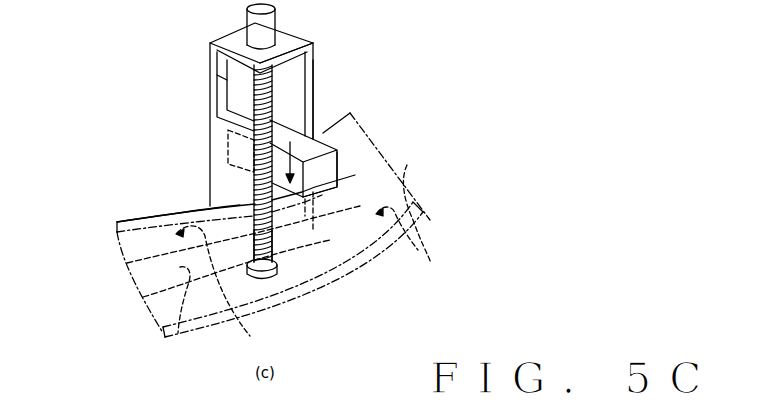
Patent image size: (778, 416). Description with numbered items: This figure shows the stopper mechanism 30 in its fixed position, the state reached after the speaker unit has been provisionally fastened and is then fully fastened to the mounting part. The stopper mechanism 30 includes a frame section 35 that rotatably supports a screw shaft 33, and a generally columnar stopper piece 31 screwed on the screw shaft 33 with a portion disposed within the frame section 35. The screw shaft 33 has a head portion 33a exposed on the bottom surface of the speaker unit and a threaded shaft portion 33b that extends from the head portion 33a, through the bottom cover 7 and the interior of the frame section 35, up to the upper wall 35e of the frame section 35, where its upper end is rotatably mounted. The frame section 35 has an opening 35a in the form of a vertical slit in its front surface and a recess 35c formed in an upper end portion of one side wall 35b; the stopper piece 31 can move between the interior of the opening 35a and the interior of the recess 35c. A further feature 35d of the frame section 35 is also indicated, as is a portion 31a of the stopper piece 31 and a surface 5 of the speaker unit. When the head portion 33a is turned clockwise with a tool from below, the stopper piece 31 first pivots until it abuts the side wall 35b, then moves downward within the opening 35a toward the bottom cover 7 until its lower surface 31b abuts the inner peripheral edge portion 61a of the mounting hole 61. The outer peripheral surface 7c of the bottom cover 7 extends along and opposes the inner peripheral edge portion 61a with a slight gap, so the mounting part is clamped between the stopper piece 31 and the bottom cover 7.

The stopper mechanism 30 is at (201, 79).
The frame section 35 is at (314, 57).
The opening 35a is at (318, 90).
The side wall 35b is at (318, 70).
The recess 35c is at (217, 122).
The recess 35d is at (226, 148).
The upper wall 35e is at (287, 43).
The screw shaft 33 is at (274, 108).
The head portion 33a is at (275, 237).
The shaft portion 33b is at (280, 222).
The stopper piece 31 is at (345, 162).
The engagement surface 31a is at (340, 173).
The lower surface 31b is at (340, 190).
The base plate 5 is at (431, 263).
The mounting hole 61 is at (160, 218).
The inner peripheral edge portion 61a is at (142, 222).
The bottom cover 7 is at (250, 336).
The outer peripheral surface 7c is at (180, 333).